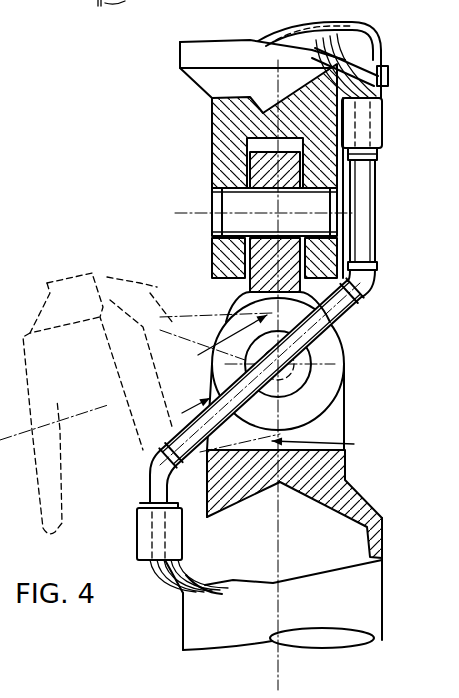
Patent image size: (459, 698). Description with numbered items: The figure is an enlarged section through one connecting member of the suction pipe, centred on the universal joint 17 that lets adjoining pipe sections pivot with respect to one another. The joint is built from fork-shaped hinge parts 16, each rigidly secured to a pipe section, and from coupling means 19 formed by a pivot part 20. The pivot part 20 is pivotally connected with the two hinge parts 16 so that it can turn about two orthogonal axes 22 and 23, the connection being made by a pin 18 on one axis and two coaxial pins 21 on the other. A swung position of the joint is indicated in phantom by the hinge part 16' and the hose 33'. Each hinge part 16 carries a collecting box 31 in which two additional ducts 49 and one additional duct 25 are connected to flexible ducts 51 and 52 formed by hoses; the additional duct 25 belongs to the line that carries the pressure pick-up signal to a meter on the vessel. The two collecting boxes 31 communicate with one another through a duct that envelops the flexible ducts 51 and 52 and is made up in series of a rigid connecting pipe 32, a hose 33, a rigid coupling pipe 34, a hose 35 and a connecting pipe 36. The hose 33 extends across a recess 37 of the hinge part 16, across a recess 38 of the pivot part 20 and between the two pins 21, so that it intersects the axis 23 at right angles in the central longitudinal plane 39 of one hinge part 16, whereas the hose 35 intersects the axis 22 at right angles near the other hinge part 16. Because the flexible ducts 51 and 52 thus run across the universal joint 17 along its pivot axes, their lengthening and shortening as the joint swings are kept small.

The fork-shaped hinge part 16 is at (267, 345).
The hinge part (swung position) 16' is at (86, 403).
The universal joint 17 is at (153, 172).
The pin 18 is at (222, 202).
The coupling means 19 is at (190, 401).
The pivot part 20 is at (250, 283).
The coaxial pins 21 is at (305, 384).
The axis 22 is at (205, 213).
The axis 23 is at (300, 366).
The additional duct 25 is at (314, 35).
The collecting box 31 is at (363, 123).
The rigid connecting pipe 32 is at (150, 466).
The hose 33 is at (267, 373).
The hose (swung position) 33' is at (189, 286).
The rigid coupling pipe 34 is at (362, 288).
The hose 35 is at (367, 208).
The connecting pipe 36 is at (371, 153).
The recess 37 is at (322, 443).
The recess 38 is at (222, 344).
The central longitudinal plane 39 is at (345, 481).
The additional ducts 49 is at (340, 38).
The flexible duct 51 is at (377, 76).
The flexible duct 52 is at (352, 100).